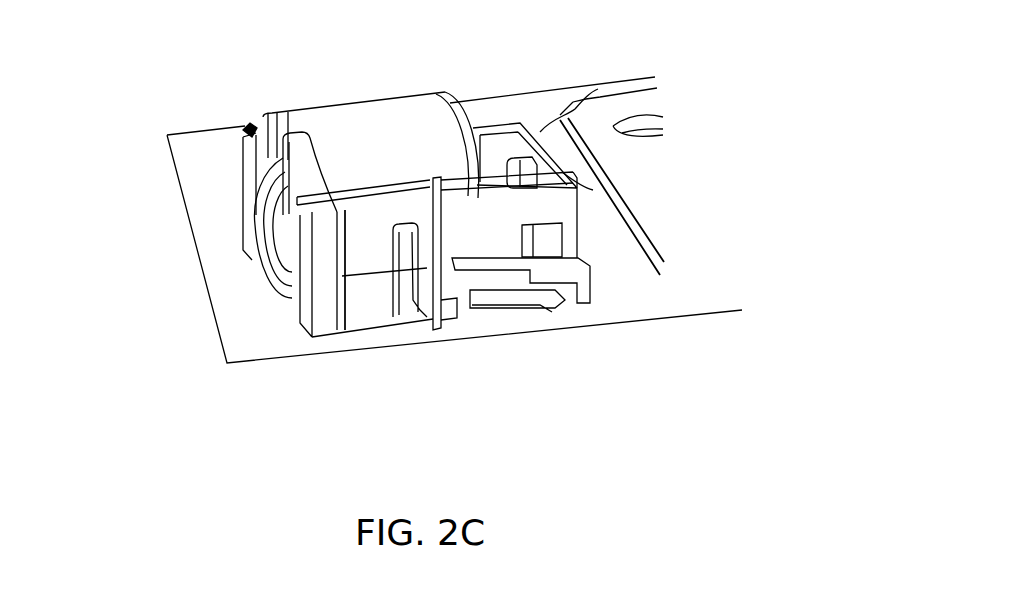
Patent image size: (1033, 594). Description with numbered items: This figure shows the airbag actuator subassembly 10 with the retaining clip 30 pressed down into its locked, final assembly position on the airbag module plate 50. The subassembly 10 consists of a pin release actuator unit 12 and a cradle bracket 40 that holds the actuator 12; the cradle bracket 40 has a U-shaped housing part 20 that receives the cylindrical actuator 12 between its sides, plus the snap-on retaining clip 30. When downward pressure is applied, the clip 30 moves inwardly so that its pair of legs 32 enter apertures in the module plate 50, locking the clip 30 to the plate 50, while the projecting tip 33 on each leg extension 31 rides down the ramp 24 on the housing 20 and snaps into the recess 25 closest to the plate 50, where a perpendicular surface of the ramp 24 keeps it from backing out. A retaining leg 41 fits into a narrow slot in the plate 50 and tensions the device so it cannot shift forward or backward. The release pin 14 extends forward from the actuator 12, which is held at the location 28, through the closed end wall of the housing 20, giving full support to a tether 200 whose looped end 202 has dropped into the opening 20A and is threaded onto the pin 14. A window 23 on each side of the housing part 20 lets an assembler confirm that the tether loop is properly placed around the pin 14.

The airbag actuator subassembly 10 is at (222, 72).
The pin release actuator unit 12 is at (483, 128).
The release pin 14 is at (593, 190).
The U-shaped housing part 20 is at (570, 150).
The opening 20A is at (597, 90).
The window 23 is at (557, 237).
The ramp 24 is at (477, 290).
The recess 25 is at (420, 327).
The location 28 is at (478, 143).
The retaining clip 30 is at (377, 97).
The leg extension 31 is at (452, 295).
The leg 32 is at (370, 303).
The projecting tip 33 is at (427, 335).
The cradle bracket 40 is at (250, 156).
The retaining leg 41 is at (535, 310).
The airbag module plate 50 is at (210, 247).
The tether 200 is at (522, 237).
The looped end 202 is at (521, 125).